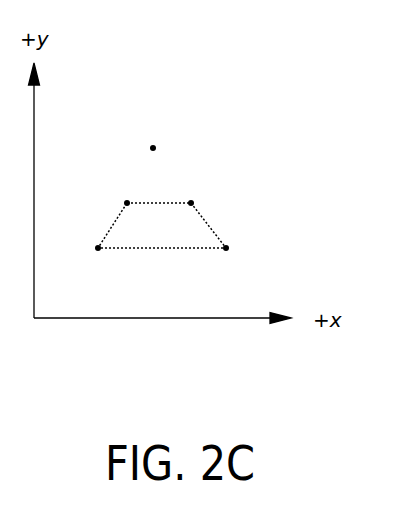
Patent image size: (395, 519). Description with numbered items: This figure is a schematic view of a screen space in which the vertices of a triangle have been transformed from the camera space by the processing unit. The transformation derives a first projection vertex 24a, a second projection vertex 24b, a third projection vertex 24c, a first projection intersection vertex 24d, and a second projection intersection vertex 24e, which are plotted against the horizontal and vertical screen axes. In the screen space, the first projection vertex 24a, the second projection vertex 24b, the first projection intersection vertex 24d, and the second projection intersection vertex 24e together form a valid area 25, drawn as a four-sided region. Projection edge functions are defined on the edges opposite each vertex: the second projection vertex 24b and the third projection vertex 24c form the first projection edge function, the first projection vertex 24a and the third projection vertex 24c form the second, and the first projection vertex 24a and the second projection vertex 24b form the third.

The first projection vertex 24a is at (127, 203).
The second projection vertex 24b is at (191, 203).
The third projection vertex 24c is at (153, 148).
The first projection intersection vertex 24d is at (98, 248).
The second projection intersection vertex 24e is at (226, 248).
The valid area 25 is at (162, 225).